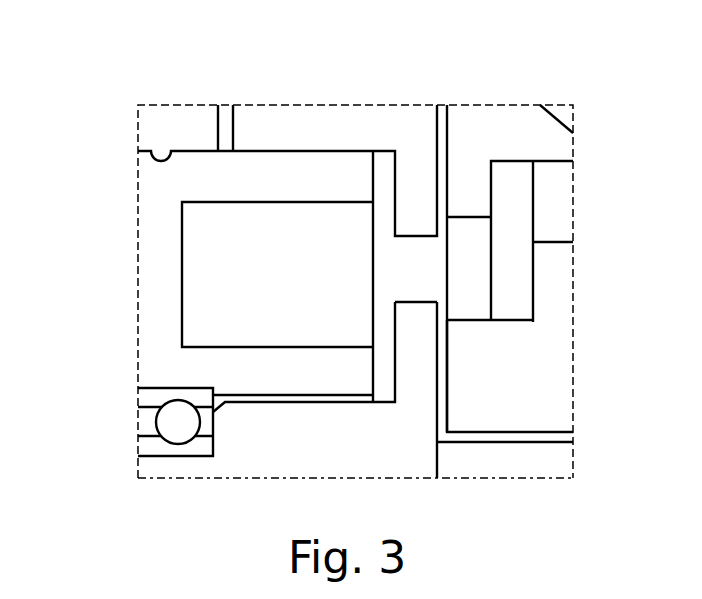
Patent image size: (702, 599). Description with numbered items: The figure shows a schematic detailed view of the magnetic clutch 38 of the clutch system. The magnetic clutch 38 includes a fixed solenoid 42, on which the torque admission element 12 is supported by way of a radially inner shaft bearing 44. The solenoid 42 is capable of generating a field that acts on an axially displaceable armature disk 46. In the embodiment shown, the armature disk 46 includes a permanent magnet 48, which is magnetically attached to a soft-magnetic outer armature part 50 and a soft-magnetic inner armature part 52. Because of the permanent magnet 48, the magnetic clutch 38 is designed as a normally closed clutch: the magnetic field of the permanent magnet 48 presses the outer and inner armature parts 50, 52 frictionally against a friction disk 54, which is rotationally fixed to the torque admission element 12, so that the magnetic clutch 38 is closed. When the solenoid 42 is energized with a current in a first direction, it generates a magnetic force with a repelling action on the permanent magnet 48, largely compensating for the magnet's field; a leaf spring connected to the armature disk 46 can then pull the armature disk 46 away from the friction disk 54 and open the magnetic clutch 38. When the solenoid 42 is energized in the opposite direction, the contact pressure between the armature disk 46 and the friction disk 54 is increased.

The magnetic clutch 38 is at (133, 100).
The torque admission element 12 is at (270, 447).
The solenoid 42 is at (238, 256).
The shaft bearing 44 is at (178, 422).
The armature disk 46 is at (568, 189).
The permanent magnet 48 is at (514, 212).
The outer armature part 50 is at (507, 148).
The inner armature part 52 is at (537, 362).
The friction disk 54 is at (415, 162).